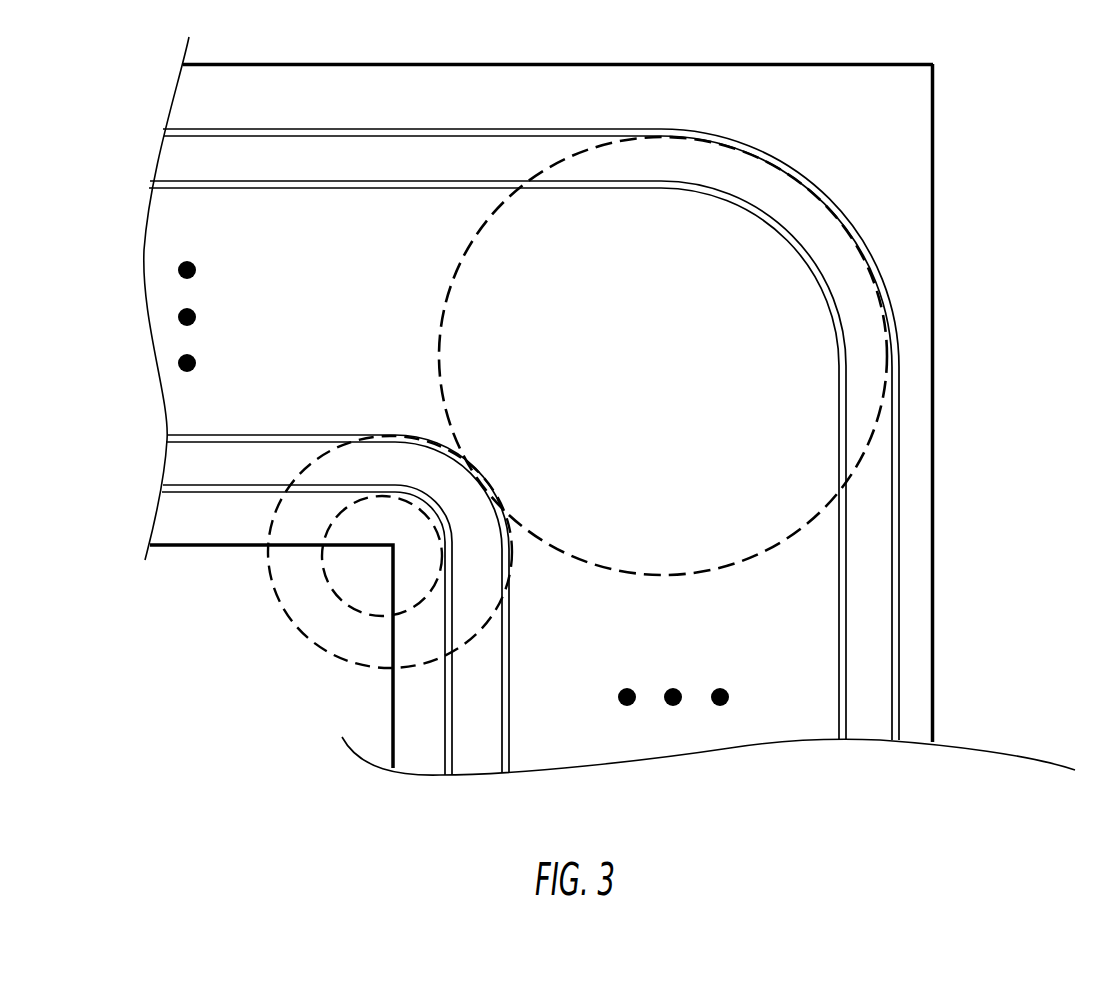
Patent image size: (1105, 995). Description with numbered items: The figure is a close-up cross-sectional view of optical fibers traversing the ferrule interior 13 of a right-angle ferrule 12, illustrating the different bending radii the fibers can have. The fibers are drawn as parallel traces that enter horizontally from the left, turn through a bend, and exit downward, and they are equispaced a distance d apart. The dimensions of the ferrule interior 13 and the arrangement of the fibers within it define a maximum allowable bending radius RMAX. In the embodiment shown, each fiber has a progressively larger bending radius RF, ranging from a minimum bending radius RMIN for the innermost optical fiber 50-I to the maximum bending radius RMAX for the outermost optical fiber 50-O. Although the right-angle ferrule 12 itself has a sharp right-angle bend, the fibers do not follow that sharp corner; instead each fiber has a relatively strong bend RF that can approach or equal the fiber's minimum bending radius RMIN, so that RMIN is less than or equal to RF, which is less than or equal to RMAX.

The right-angle ferrule 12 is at (933, 695).
The ferrule interior 13 is at (802, 645).
The outermost optical fiber 50-O is at (378, 128).
The innermost optical fiber 50-I is at (205, 497).
The distance d is at (205, 138).
The maximum allowable bending radius RMAX is at (825, 207).
The minimum bending radius RMIN is at (424, 521).
The bending radius RF is at (383, 555).